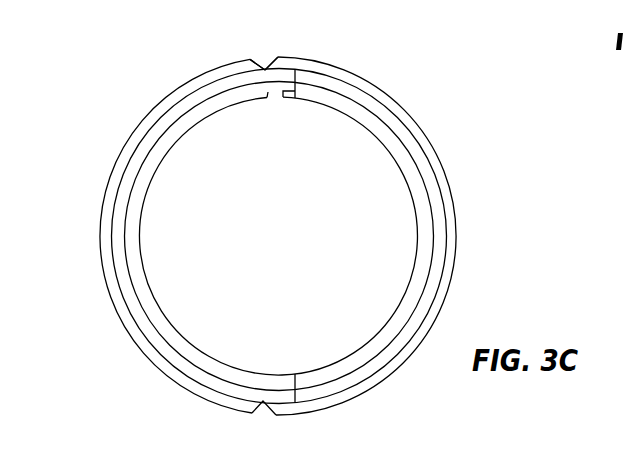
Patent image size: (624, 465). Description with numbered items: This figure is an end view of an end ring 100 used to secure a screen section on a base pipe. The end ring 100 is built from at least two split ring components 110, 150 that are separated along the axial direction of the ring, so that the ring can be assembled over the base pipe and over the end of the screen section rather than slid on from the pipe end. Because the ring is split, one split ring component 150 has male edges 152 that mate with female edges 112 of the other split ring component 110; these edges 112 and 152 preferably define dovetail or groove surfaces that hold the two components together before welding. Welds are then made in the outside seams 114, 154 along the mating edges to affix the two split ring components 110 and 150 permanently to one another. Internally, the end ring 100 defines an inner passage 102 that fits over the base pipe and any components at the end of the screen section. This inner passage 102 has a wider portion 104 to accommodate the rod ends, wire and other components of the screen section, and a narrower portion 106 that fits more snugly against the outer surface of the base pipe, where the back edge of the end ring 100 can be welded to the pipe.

The end ring 100 is at (132, 89).
The inner passage 102 is at (356, 179).
The wider portion 104 is at (138, 307).
The narrower portion 106 is at (145, 277).
The split ring component 110 is at (455, 183).
The female edges 112 is at (286, 96).
The outside seam 114 is at (271, 64).
The split ring component 150 is at (193, 78).
The male edges 152 is at (267, 97).
The notch arm 154 is at (261, 67).